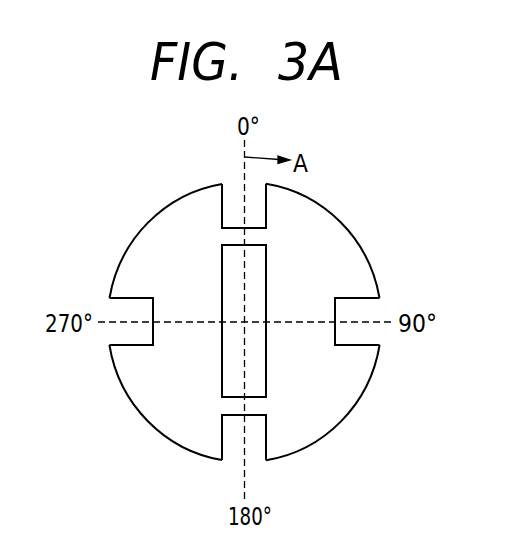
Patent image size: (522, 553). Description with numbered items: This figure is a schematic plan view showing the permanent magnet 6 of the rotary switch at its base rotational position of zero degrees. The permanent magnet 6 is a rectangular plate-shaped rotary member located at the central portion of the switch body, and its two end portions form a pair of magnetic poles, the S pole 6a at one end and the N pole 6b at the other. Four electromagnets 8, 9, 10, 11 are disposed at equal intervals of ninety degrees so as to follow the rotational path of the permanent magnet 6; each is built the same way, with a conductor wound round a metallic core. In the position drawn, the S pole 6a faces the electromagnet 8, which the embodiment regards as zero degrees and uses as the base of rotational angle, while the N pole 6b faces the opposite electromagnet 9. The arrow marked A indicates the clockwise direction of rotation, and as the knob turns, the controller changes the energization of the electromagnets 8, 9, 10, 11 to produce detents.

The permanent magnet 6 is at (233, 310).
The S pole 6a is at (228, 244).
The N pole 6b is at (232, 402).
The electromagnet 8 is at (266, 203).
The electromagnet 9 is at (266, 440).
The electromagnet 10 is at (352, 346).
The electromagnet 11 is at (133, 298).